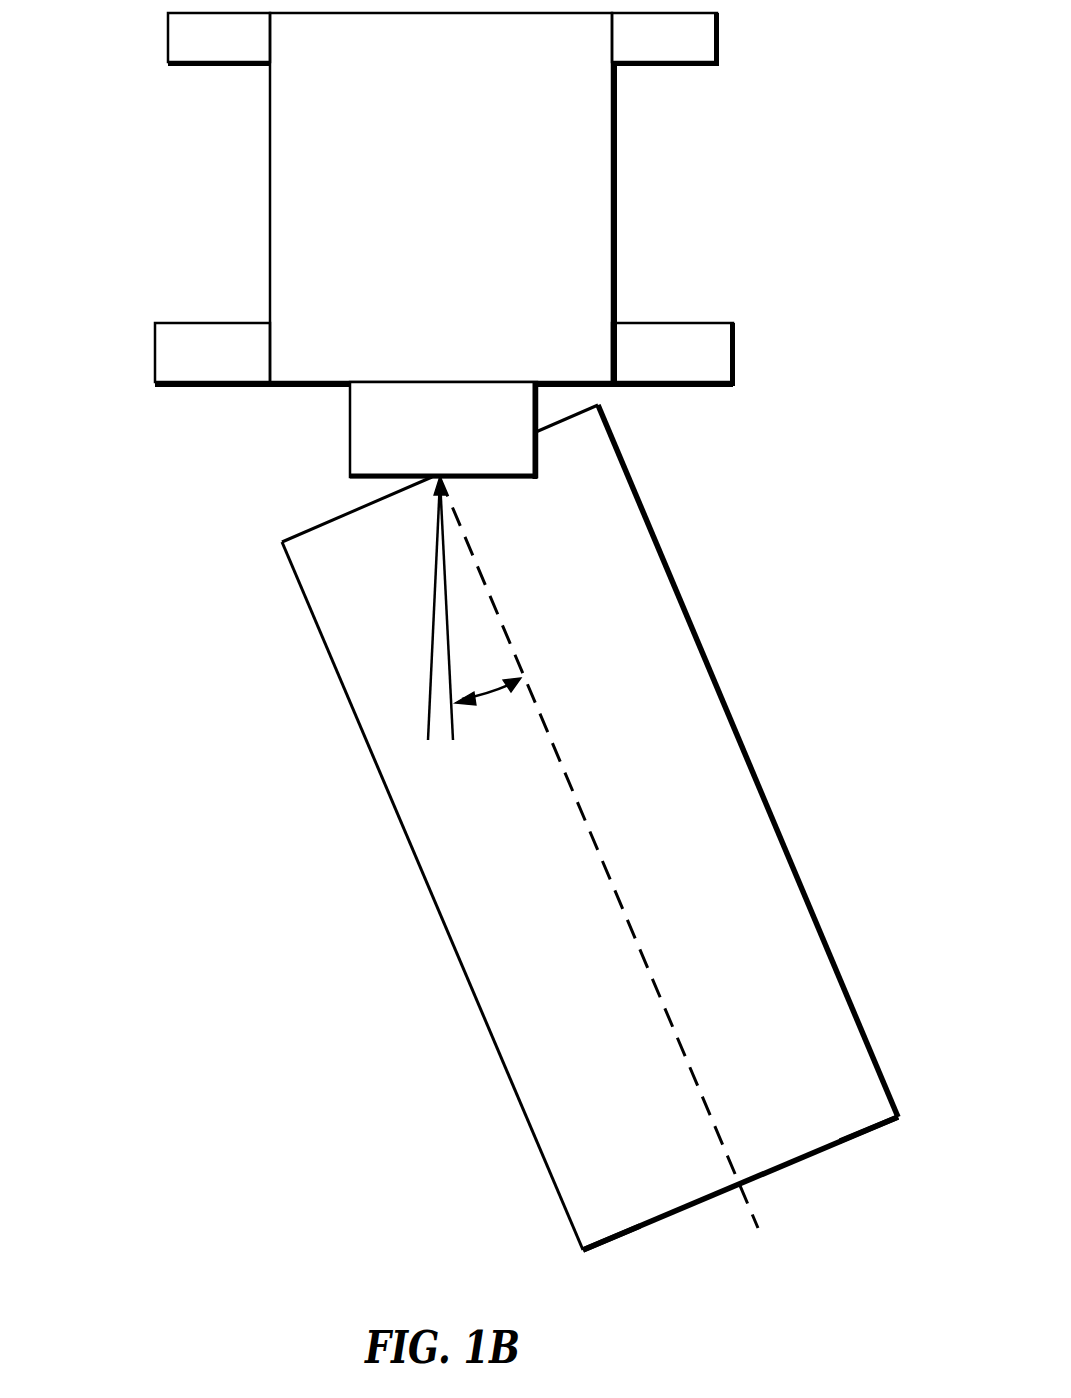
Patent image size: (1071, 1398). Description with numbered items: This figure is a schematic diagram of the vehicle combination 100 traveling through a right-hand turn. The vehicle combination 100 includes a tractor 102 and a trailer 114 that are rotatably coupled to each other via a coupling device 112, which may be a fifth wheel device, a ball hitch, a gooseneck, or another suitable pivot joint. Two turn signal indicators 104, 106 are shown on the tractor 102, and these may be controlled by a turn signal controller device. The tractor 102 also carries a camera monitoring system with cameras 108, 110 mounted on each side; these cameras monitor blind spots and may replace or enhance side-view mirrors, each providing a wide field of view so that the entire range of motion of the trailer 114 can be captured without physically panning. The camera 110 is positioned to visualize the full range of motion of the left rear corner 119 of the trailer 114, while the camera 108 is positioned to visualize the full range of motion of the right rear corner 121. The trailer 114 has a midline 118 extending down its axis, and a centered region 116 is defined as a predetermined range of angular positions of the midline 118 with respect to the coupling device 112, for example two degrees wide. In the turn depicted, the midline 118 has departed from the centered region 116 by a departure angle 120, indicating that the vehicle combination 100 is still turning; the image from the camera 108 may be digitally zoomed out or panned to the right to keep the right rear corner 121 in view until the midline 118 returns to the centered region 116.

The vehicle combination 100 is at (116, 1203).
The tractor 102 is at (617, 162).
The turn signal indicator 104 is at (719, 30).
The turn signal indicator 106 is at (168, 38).
The camera 108 is at (735, 340).
The camera 110 is at (155, 337).
The coupling device 112 is at (350, 428).
The trailer 114 is at (474, 1003).
The centered region 116 is at (418, 603).
The midline 118 is at (676, 1030).
The left rear corner 119 is at (583, 1251).
The departure angle 120 is at (487, 747).
The right rear corner 121 is at (898, 1119).